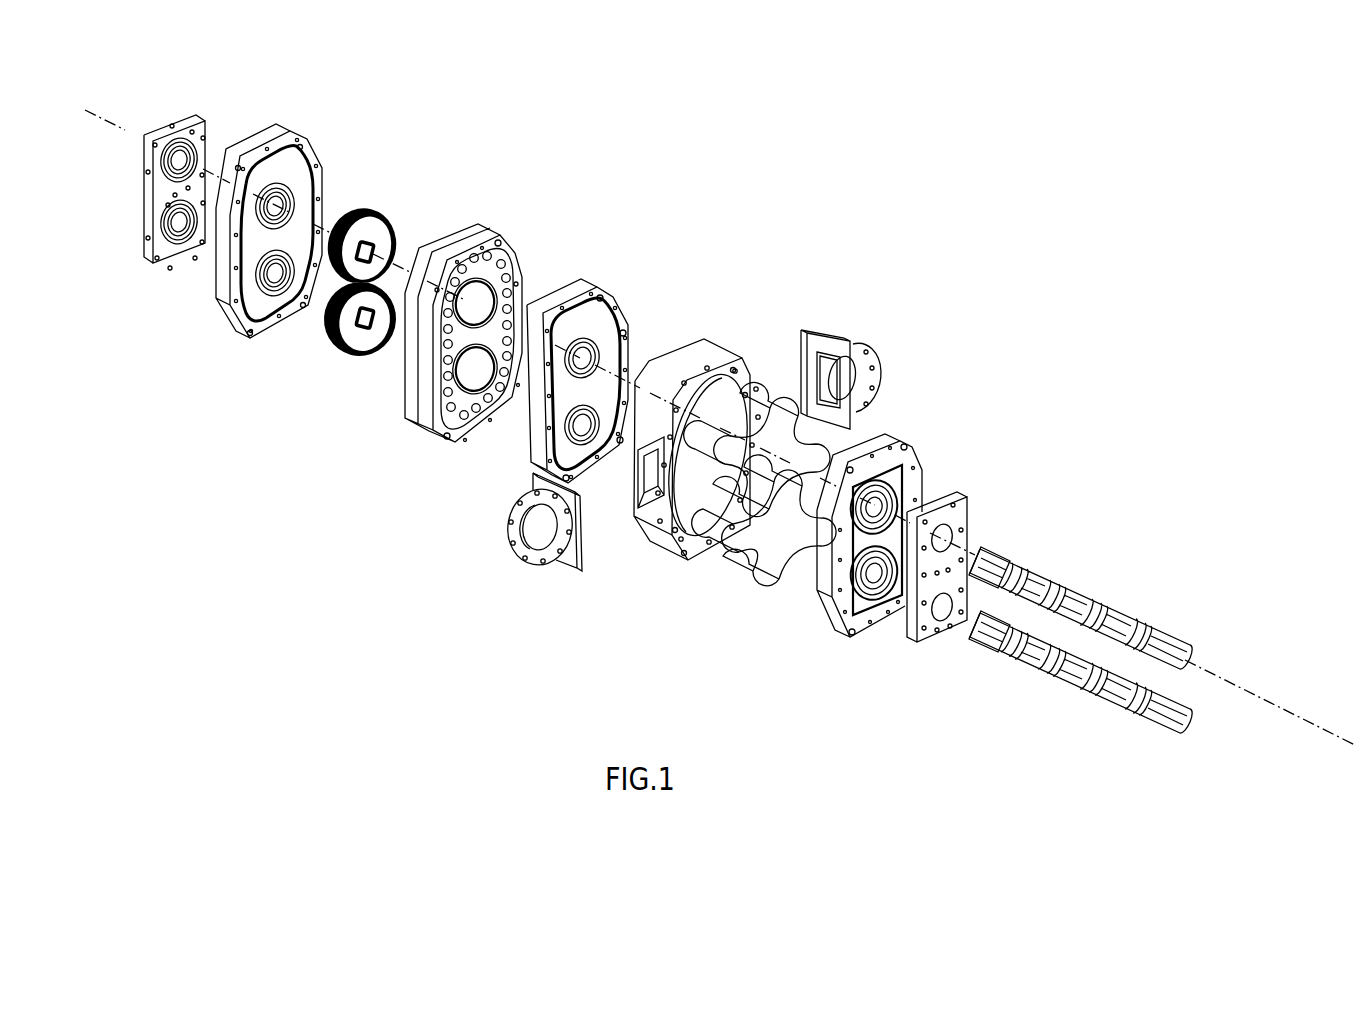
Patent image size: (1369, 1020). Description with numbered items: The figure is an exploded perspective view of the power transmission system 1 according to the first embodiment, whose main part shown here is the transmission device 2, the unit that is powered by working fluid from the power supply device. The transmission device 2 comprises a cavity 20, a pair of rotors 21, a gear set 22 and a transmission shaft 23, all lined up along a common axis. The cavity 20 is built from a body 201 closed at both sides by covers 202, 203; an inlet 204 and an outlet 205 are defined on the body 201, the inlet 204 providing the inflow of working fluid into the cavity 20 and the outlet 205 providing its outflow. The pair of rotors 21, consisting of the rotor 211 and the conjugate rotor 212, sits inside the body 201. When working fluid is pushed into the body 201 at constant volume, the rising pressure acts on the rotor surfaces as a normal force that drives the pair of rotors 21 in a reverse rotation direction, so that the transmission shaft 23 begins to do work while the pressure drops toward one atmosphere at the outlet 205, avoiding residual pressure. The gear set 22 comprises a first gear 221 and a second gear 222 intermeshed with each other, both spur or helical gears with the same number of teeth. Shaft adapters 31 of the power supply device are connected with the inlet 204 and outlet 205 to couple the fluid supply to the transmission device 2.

The power transmission system 1 is at (878, 246).
The transmission device 2 is at (988, 395).
The cavity 20 is at (769, 309).
The body 201 is at (702, 418).
The cover 202 is at (892, 433).
The cover 203 is at (597, 288).
The inlet 204 is at (643, 518).
The outlet 205 is at (750, 385).
The pair of rotors 21 is at (773, 632).
The rotor 211 is at (755, 490).
The conjugate rotor 212 is at (770, 578).
The gear set 22 is at (330, 420).
The first gear 221 is at (330, 287).
The second gear 222 is at (357, 340).
The transmission shaft 23 is at (1128, 685).
The shaft adapter 31 is at (862, 354).